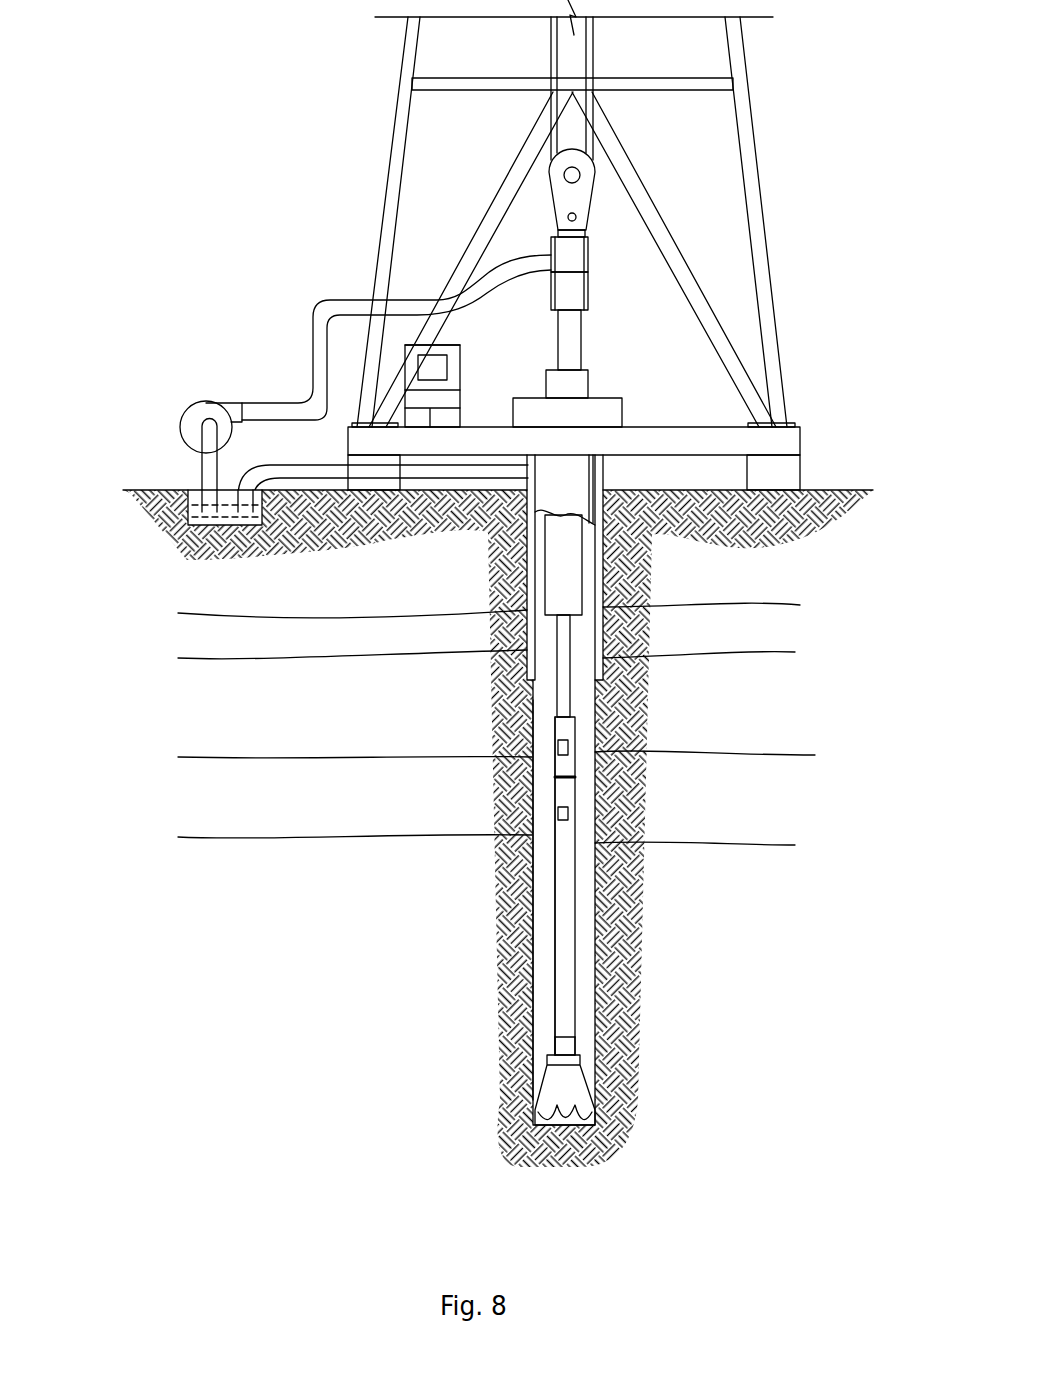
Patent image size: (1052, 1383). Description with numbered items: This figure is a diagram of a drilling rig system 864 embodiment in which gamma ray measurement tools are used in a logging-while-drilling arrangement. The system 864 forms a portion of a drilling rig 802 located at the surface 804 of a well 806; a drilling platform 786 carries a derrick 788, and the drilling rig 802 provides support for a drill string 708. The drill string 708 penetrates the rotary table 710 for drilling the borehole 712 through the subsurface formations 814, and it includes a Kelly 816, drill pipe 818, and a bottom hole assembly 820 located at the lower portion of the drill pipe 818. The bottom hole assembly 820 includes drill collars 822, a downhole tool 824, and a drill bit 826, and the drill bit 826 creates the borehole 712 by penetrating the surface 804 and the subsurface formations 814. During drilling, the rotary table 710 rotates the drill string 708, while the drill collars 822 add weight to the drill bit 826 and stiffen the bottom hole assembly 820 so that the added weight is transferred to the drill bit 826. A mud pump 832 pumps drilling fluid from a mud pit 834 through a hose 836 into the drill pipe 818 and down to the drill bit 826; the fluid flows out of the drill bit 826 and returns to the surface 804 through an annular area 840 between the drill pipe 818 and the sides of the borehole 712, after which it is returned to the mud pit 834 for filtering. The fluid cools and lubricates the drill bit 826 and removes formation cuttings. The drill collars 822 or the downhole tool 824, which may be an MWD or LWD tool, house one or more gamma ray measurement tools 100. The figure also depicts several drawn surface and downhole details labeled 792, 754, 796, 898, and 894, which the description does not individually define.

The drilling rig system 864 is at (264, 108).
The derrick 788 is at (751, 108).
The drilling rig 802 is at (775, 207).
The hose 836 is at (325, 300).
The mud pump 832 is at (217, 400).
The mud pit 834 is at (208, 526).
The surface control unit 792 is at (450, 337).
The controller 754 is at (462, 358).
The sensor 796 is at (450, 370).
The rotary table 710 is at (532, 398).
The Kelly 816 is at (581, 330).
The rotary drive 898 is at (588, 383).
The drilling platform 786 is at (800, 427).
The surface 804 is at (825, 491).
The well 806 is at (616, 486).
The drill collars 822 is at (582, 575).
The drill pipe 818 is at (569, 655).
The annular area 840 is at (588, 708).
The gamma ray measurement tool 100 is at (569, 748).
The coupling 894 is at (576, 777).
The drill string 708 is at (583, 907).
The borehole 712 is at (600, 970).
The downhole tool 824 is at (563, 1016).
The drill bit 826 is at (573, 1078).
The subsurface formations 814 is at (160, 612).
The bottom hole assembly 820 is at (483, 673).